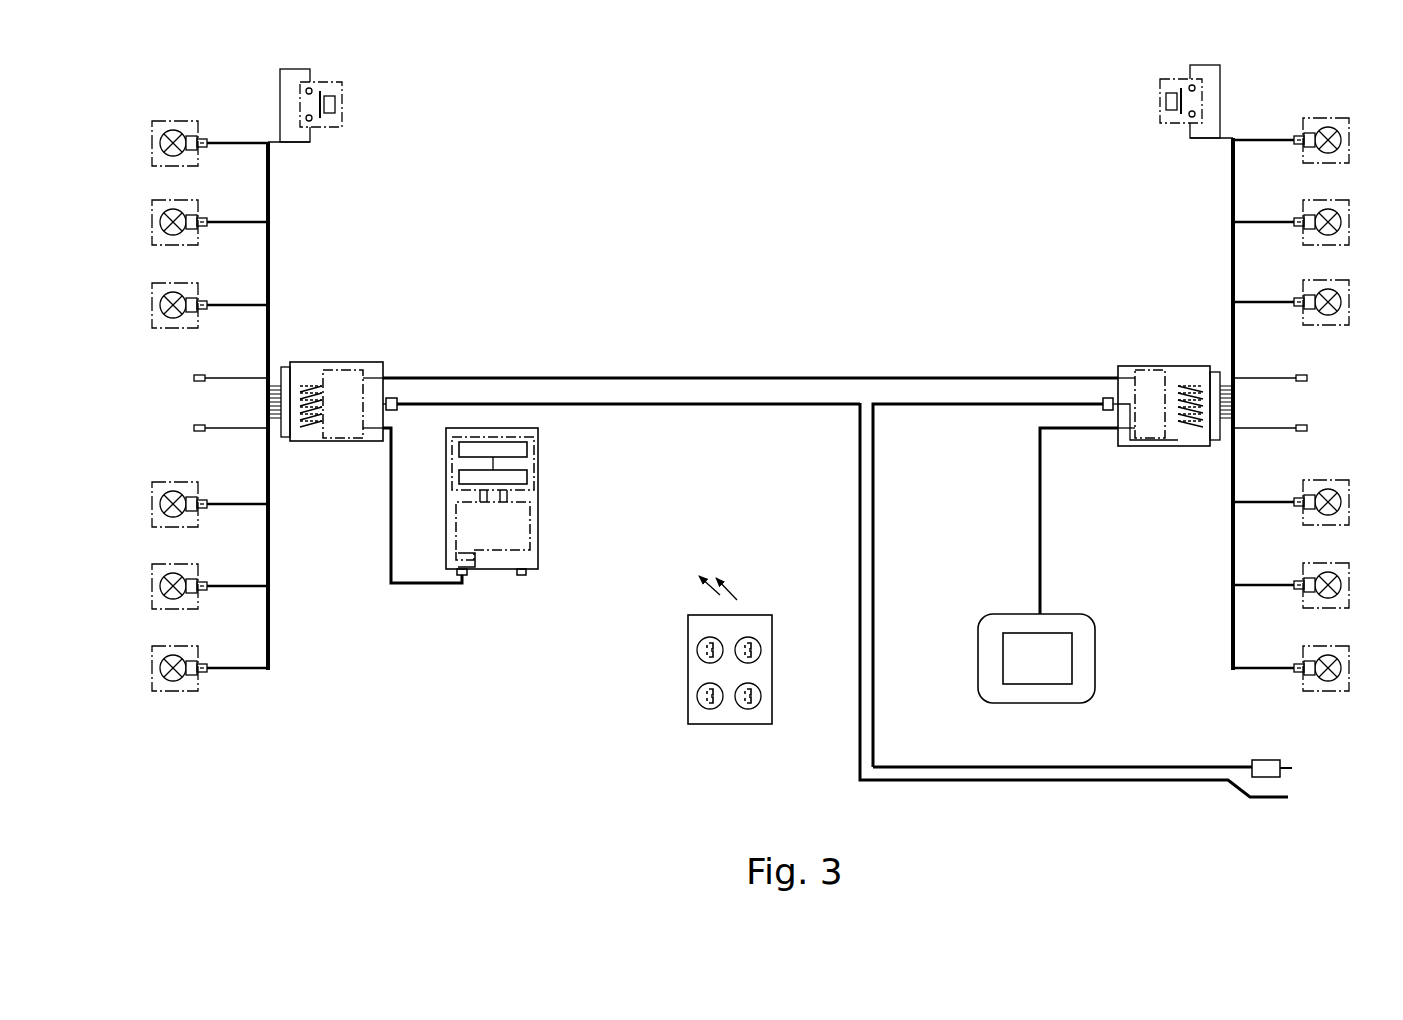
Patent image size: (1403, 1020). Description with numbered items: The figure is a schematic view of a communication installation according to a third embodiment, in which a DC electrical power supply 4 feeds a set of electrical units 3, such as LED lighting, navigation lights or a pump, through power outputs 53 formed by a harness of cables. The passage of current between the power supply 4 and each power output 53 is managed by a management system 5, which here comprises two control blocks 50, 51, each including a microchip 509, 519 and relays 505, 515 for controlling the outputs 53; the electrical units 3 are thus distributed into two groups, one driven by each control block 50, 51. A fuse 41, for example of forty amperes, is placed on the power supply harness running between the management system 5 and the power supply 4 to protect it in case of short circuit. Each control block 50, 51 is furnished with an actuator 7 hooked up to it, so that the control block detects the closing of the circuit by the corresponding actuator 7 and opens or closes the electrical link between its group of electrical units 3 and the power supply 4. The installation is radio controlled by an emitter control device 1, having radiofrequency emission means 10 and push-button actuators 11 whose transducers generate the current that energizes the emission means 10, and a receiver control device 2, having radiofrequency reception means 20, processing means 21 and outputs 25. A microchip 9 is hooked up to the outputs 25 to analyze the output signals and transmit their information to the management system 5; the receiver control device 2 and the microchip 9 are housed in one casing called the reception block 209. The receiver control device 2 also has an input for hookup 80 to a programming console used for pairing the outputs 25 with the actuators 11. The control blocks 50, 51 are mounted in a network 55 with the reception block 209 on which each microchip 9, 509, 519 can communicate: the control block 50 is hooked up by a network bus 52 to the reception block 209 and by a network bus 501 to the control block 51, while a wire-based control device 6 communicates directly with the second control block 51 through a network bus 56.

The emitter control device 1 is at (730, 647).
The receiver control device 2 is at (515, 570).
The electrical units 3 is at (150, 120).
The electrical power supply 4 is at (1305, 752).
The management system 5 is at (847, 376).
The wire-based control device 6 is at (1083, 660).
The actuator 7 is at (344, 95).
The microchip 9 is at (513, 527).
The radiofrequency emission means 10 is at (738, 623).
The actuators 11 is at (756, 696).
The radiofrequency reception means 20 is at (528, 450).
The processing means 21 is at (526, 482).
The outputs 25 is at (478, 497).
The fuse 41 is at (1265, 759).
The control block 50 is at (365, 404).
The control block 51 is at (1146, 411).
The network bus 52 is at (411, 590).
The power outputs 53 is at (271, 191).
The network 55 is at (525, 376).
The network bus 56 is at (1041, 522).
The input for hookup 80 is at (522, 580).
The reception block 209 is at (486, 603).
The network bus 501 is at (680, 376).
The relays 505 is at (304, 434).
The microchip 509 is at (353, 386).
The relays 515 is at (1196, 438).
The microchip 519 is at (1143, 382).